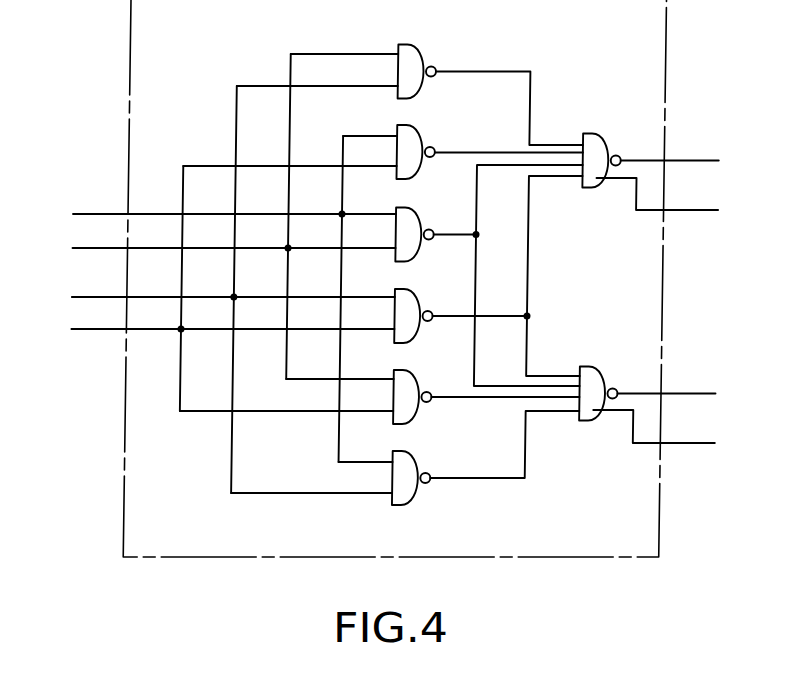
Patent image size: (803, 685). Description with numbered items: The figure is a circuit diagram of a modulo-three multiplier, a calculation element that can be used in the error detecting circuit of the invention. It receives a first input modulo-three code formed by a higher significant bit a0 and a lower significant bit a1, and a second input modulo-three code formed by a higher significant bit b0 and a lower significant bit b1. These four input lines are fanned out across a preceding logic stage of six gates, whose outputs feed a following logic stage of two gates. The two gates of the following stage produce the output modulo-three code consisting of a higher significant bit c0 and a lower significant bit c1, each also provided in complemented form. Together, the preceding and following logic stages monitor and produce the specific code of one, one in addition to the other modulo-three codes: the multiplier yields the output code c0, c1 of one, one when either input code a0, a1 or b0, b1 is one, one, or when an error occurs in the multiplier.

The higher significant bit of first input modulo-3 code a0 is at (216, 214).
The lower significant bit of first input modulo-3 code a1 is at (215, 246).
The higher significant bit of second input modulo-3 code b0 is at (215, 295).
The lower significant bit of second input modulo-3 code b1 is at (214, 327).
The higher significant bit of output modulo-3 code c0 is at (756, 192).
The lower significant bit of output modulo-3 code c1 is at (756, 427).